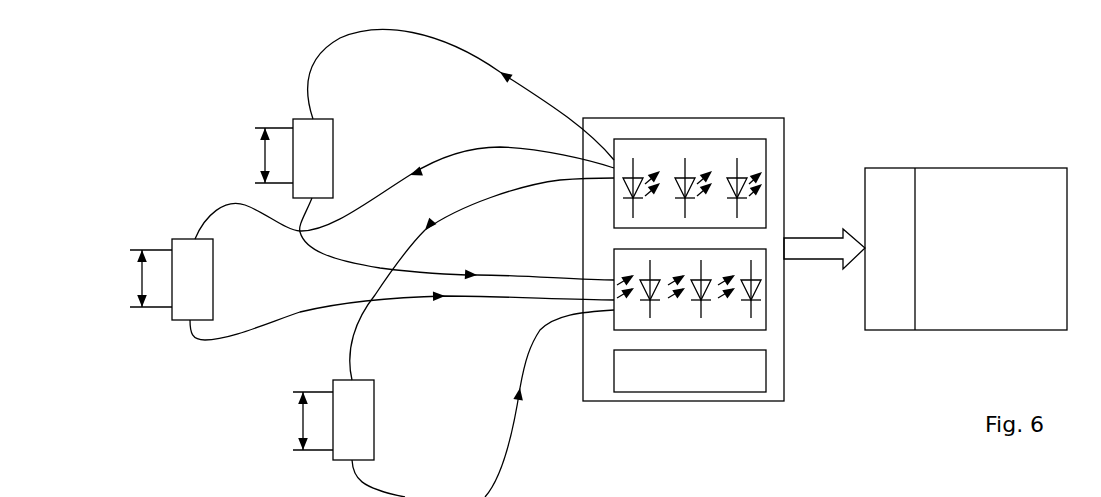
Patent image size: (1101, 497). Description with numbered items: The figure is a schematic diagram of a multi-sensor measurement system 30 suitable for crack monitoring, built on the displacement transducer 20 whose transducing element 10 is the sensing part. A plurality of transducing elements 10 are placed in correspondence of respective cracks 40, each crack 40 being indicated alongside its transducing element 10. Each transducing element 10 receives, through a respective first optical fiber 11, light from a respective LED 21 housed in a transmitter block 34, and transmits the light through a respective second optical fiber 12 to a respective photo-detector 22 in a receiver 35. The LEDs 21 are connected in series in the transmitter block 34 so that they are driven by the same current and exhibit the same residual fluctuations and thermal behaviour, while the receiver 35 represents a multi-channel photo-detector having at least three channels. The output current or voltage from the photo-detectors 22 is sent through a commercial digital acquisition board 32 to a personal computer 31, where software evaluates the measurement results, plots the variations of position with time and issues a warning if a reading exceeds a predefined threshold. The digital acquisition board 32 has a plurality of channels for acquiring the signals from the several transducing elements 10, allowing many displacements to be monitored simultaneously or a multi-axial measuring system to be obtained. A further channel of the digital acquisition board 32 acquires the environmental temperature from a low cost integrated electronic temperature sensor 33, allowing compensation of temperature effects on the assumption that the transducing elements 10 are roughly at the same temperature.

The transducing element 10 is at (313, 168).
The first optical fiber 11 is at (404, 199).
The second optical fiber 12 is at (402, 347).
The displacement transducer 20 is at (194, 0).
The LED 21 is at (685, 178).
The photo-detector 22 is at (695, 310).
The measurement system 30 is at (190, 474).
The personal computer 31 is at (966, 214).
The digital acquisition board 32 is at (885, 178).
The temperature sensor 33 is at (723, 380).
The transmitter block 34 is at (710, 138).
The receiver 35 is at (732, 342).
The crack 40 is at (218, 289).